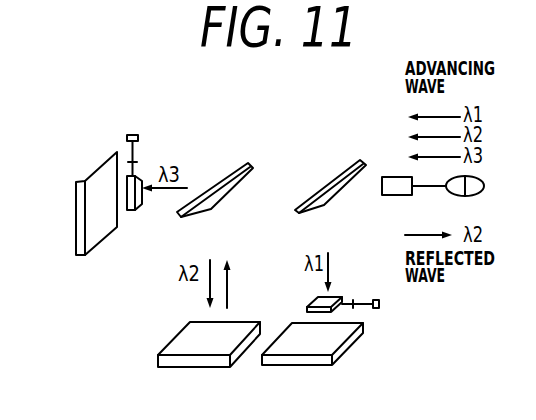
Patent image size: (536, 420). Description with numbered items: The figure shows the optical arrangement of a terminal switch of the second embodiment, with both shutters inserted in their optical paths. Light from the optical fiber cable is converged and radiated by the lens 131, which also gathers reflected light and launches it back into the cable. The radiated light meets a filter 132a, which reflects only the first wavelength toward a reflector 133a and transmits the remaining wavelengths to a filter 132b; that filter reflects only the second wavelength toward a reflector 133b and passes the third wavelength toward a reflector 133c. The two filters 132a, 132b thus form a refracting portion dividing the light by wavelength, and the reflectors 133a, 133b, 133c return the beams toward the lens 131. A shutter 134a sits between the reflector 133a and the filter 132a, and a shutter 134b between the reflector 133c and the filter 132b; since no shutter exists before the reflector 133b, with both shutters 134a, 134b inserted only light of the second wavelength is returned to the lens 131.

The lens 131 is at (388, 196).
The filter 132a is at (350, 160).
The filter 132b is at (240, 162).
The reflector 133a is at (364, 334).
The reflector 133b is at (172, 342).
The reflector 133c is at (88, 162).
The shutter 134a is at (309, 299).
The shutter 134b is at (138, 207).